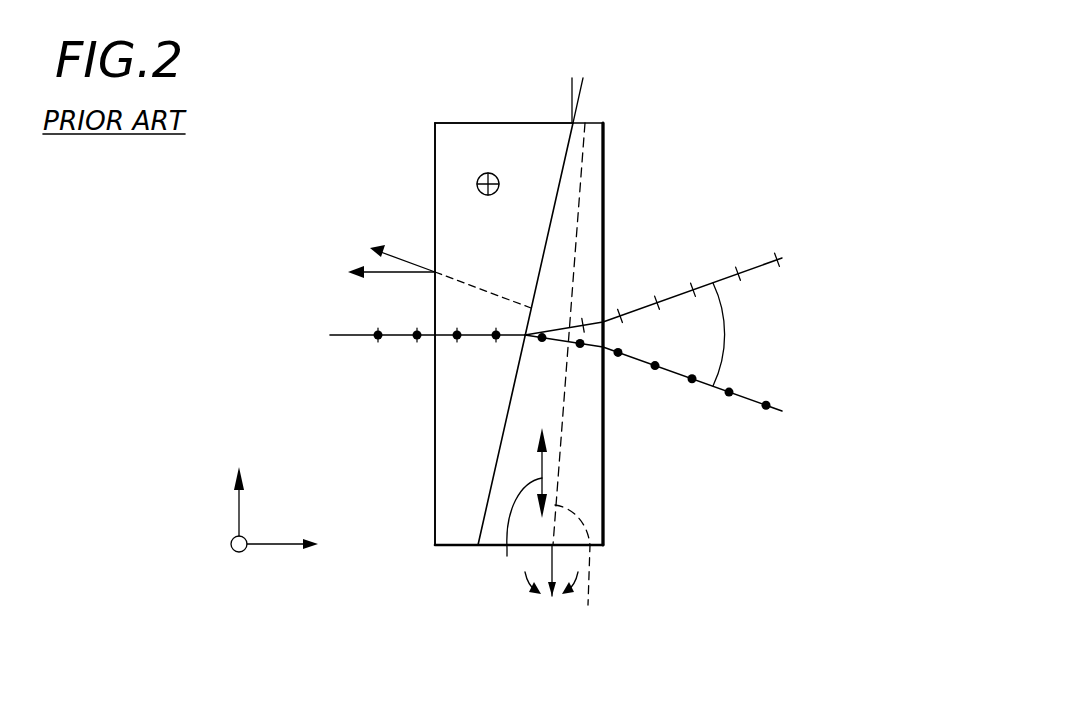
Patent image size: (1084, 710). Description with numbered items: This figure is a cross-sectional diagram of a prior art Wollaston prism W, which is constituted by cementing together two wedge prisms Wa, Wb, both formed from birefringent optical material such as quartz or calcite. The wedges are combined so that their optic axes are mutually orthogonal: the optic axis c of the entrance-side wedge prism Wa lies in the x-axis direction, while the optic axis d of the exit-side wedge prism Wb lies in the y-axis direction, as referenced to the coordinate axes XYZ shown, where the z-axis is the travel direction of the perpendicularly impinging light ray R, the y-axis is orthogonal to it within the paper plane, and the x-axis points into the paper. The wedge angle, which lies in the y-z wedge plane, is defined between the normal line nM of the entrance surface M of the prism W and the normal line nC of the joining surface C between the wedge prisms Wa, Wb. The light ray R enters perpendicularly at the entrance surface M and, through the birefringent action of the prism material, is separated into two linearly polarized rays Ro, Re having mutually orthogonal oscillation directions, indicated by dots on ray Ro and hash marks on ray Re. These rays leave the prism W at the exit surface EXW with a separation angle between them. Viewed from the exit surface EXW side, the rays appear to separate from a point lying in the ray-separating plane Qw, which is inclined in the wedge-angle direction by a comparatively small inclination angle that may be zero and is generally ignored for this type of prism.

The Wollaston prism W is at (318, 104).
The wedge prism Wa is at (500, 128).
The wedge prism Wb is at (597, 128).
The entrance surface M is at (435, 510).
The joining surface C is at (484, 518).
The optic axis c is at (477, 185).
The normal line of joining surface nC is at (405, 258).
The normal line of entrance surface nM is at (390, 273).
The light ray R is at (410, 334).
The extraordinary linearly polarized light ray Re is at (767, 258).
The ordinary linearly polarized light ray Ro is at (742, 402).
The optic axis d is at (521, 504).
The ray-separating plane Qw is at (581, 572).
The exit surface EXW is at (603, 533).
The coordinate axes XYZ is at (274, 503).